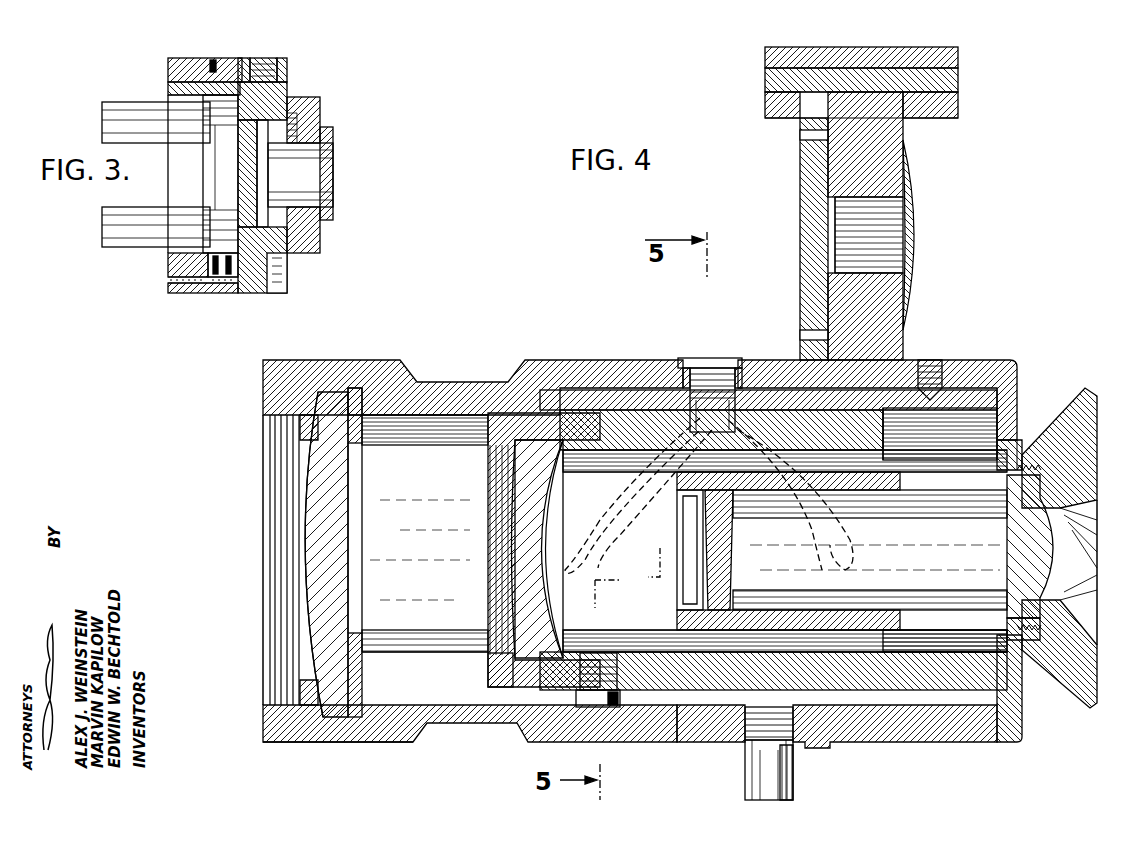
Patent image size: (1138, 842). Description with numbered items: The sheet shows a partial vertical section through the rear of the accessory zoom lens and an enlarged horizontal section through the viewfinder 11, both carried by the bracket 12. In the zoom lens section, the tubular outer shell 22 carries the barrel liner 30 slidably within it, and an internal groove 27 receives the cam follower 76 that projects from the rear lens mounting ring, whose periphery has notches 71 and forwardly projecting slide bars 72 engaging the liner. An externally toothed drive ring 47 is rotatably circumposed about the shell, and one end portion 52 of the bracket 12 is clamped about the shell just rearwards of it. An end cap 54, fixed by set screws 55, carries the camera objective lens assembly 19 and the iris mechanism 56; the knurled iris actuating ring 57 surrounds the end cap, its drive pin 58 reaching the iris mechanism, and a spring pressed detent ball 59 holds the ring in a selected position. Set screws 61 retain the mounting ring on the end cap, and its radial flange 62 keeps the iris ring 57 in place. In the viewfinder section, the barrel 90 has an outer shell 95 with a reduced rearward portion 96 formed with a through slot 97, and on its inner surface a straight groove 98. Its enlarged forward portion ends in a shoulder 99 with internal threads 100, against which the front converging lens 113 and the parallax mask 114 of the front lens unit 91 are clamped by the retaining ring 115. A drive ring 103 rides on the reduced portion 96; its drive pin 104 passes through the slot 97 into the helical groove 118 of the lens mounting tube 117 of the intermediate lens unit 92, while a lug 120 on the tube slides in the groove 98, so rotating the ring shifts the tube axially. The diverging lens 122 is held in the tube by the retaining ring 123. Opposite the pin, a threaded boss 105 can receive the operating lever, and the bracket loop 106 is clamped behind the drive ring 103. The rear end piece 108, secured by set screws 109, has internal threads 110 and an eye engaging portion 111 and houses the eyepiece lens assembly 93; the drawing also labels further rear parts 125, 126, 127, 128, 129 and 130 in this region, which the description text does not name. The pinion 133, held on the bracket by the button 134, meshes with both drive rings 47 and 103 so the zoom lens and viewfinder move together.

In FIG. 4, the viewfinder 11 is at (1040, 250).
In FIG. 4, the bracket 12 is at (900, 131).
In FIG. 3, the lens assembly 19 is at (318, 170).
In FIG. 3, the outer shell 22 is at (168, 78).
In FIG. 4, the outer shell 22 is at (955, 80).
In FIG. 3, the groove 27 is at (170, 265).
In FIG. 3, the barrel liner 30 is at (168, 92).
In FIG. 4, the barrel liner 30 is at (955, 58).
In FIG. 4, the drive ring 47 is at (778, 118).
In FIG. 3, the end portion of the bracket 52 is at (186, 58).
In FIG. 3, the end cap 54 is at (243, 58).
In FIG. 4, the end cap 54 is at (955, 106).
In FIG. 3, the set screws 55 is at (213, 60).
In FIG. 3, the iris mechanism 56 is at (252, 172).
In FIG. 3, the iris actuating ring 57 is at (280, 58).
In FIG. 3, the drive pin 58 is at (284, 268).
In FIG. 3, the detent ball 59 is at (258, 58).
In FIG. 3, the set screws 61 is at (312, 98).
In FIG. 3, the radial flange 62 is at (287, 78).
In FIG. 3, the notches 71 is at (213, 130).
In FIG. 3, the slide bars 72 is at (103, 128).
In FIG. 3, the cam follower 76 is at (200, 292).
In FIG. 4, the viewfinder barrel 90 is at (395, 372).
In FIG. 4, the front viewfinder lens unit 91 is at (296, 603).
In FIG. 4, the intermediate viewfinder lens unit 92 is at (518, 594).
In FIG. 4, the eyepiece lens assembly 93 is at (965, 632).
In FIG. 4, the outer shell 95 is at (404, 744).
In FIG. 4, the reduced rearward portion 96 is at (768, 364).
In FIG. 4, the through slot 97 is at (662, 366).
In FIG. 4, the groove 98 is at (470, 710).
In FIG. 4, the shoulder 99 is at (355, 392).
In FIG. 4, the internal screw threads 100 is at (280, 496).
In FIG. 4, the drive ring 103 is at (707, 743).
In FIG. 4, the drive pin 104 is at (718, 358).
In FIG. 4, the boss 105 is at (795, 781).
In FIG. 4, the end portion of the bracket 106 is at (878, 742).
In FIG. 4, the rear end piece 108 is at (1024, 732).
In FIG. 4, the set screws 109 is at (938, 360).
In FIG. 4, the internal screw threads 110 is at (1028, 445).
In FIG. 4, the eye engaging portion 111 is at (1090, 560).
In FIG. 4, the front converging lens 113 is at (305, 566).
In FIG. 4, the mask 114 is at (366, 646).
In FIG. 4, the retaining ring 115 is at (283, 392).
In FIG. 4, the lens mounting tube 117 is at (490, 668).
In FIG. 4, the helical groove 118 is at (655, 485).
In FIG. 4, the lug 120 is at (605, 708).
In FIG. 4, the diverging lens 122 is at (521, 529).
In FIG. 4, the retaining ring 123 is at (492, 458).
In FIG. 4, the barrel portion 125 is at (925, 632).
In FIG. 4, the lens retainer 126 is at (1004, 628).
In FIG. 4, the cell holder 127 is at (678, 632).
In FIG. 4, the rear lens 128 is at (1022, 540).
In FIG. 4, the plate 129 is at (736, 584).
In FIG. 4, the aperture 130 is at (680, 610).
In FIG. 4, the pinion 133 is at (800, 218).
In FIG. 4, the button 134 is at (922, 195).